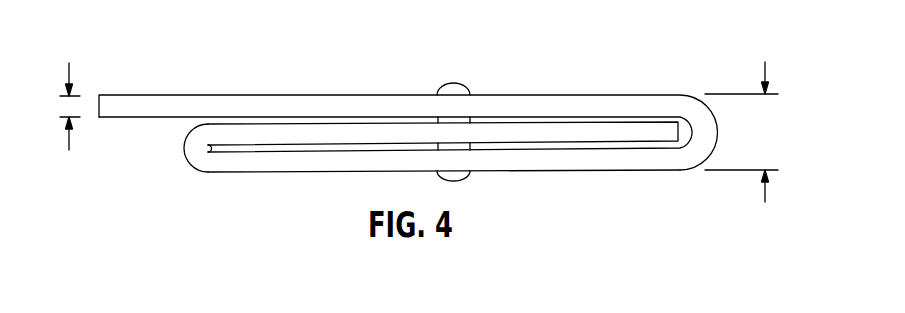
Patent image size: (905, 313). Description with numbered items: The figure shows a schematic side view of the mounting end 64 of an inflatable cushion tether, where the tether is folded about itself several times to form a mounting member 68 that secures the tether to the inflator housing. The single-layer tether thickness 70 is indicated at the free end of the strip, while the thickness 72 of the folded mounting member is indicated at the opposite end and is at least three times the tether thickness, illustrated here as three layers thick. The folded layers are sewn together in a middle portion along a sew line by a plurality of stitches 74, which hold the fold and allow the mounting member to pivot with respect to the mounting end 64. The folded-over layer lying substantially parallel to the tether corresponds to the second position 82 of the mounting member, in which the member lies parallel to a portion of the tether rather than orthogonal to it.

The mounting end 64 is at (559, 57).
The mounting member 68 is at (574, 183).
The tether thickness 70 is at (69, 68).
The mounting member thickness 72 is at (765, 72).
The stitches 74 is at (455, 83).
The second position 82 is at (265, 184).